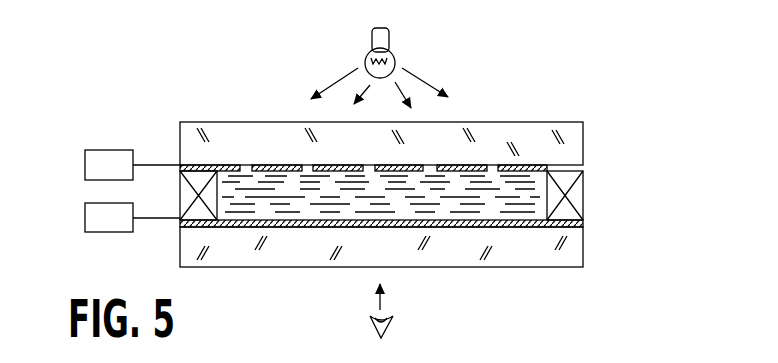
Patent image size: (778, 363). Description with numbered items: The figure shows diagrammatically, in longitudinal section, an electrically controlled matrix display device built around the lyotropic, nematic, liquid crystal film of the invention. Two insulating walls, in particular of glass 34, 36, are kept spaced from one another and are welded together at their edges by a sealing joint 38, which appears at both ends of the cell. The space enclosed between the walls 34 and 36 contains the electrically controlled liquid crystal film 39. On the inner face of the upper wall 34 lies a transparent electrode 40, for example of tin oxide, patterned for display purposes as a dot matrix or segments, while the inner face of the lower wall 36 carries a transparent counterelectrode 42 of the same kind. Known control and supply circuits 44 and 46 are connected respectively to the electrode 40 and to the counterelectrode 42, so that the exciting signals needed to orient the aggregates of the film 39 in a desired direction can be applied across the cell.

The insulating wall 34 is at (552, 147).
The insulating wall 36 is at (570, 255).
The sealing joint 38 is at (577, 198).
The lyotropic nematic liquid crystal film 39 is at (482, 194).
The transparent electrode 40 is at (260, 167).
The transparent counterelectrode 42 is at (377, 225).
The control and supply circuit 44 is at (107, 160).
The control and supply circuit 46 is at (102, 213).